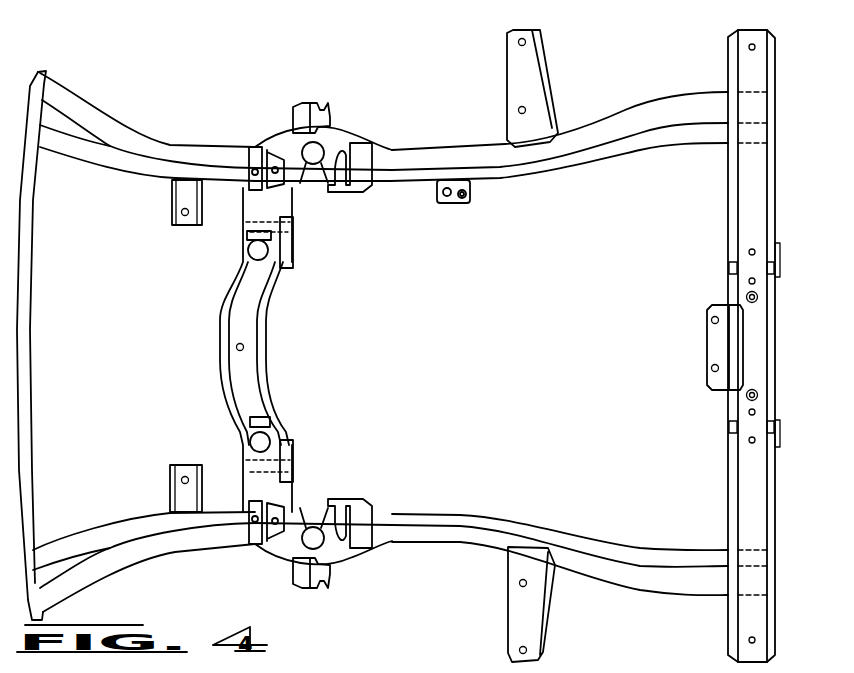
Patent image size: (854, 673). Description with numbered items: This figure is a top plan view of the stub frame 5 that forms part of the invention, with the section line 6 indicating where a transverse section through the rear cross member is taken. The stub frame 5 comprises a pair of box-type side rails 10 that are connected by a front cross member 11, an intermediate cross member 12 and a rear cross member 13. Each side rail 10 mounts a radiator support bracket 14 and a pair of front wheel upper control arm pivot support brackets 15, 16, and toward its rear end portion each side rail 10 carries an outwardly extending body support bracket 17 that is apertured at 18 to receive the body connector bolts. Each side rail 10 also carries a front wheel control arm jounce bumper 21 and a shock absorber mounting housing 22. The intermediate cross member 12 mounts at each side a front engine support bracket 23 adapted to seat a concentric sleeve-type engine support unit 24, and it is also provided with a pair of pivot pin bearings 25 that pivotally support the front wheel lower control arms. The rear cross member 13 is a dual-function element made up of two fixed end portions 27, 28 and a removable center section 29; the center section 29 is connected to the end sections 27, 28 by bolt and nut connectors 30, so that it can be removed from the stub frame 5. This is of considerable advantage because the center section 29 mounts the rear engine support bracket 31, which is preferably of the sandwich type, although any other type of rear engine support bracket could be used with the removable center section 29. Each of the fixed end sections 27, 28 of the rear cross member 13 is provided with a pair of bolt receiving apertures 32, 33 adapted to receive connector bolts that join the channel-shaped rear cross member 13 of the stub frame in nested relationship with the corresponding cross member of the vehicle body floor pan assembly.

The stub frame 5 is at (168, 142).
The section line 6- 6 is at (788, 80).
The side rails 10 is at (617, 120).
The front cross member 11 is at (38, 333).
The intermediate cross member 12 is at (230, 321).
The rear cross member 13 is at (742, 203).
The radiator support bracket 14 is at (172, 212).
The front wheel upper control arm pivot support bracket 15 is at (244, 146).
The front wheel upper control arm pivot support bracket 16 is at (363, 190).
The body support bracket 17 is at (545, 72).
The apertures 18 is at (520, 650).
The front wheel control arm jounce bumper 21 is at (313, 105).
The shock absorber mounting housing 22 is at (322, 143).
The front engine support bracket 23 is at (248, 238).
The engine support unit 24 is at (250, 259).
The pivot pin bearings 25 is at (297, 215).
The fixed end portion 27 is at (775, 166).
The fixed end portion 28 is at (733, 506).
The removable center section 29 is at (790, 333).
The bolt and nut connectors 30 is at (726, 268).
The rear engine support bracket 31 is at (718, 336).
The bolt receiving apertures 32 is at (749, 252).
The bolt receiving apertures 33 is at (752, 48).